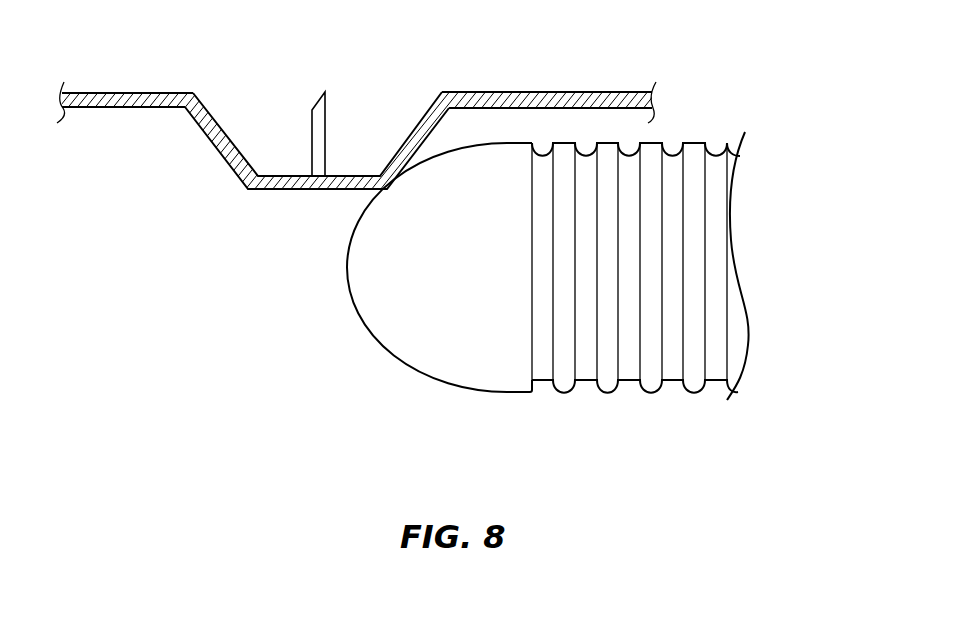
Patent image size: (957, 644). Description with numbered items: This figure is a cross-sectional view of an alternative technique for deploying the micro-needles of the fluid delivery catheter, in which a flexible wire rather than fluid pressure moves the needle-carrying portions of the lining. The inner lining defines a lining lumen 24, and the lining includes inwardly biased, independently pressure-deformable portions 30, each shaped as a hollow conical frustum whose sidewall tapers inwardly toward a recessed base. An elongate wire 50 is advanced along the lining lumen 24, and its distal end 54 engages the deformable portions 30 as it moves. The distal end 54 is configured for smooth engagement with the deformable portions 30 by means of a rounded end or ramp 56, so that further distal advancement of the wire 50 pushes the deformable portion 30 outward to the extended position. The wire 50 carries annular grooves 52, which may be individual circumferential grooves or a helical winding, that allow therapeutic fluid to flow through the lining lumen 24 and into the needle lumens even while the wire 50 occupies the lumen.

The lining lumen 24 is at (543, 125).
The pressure-deformable portion 30 is at (206, 159).
The elongate wire 50 is at (699, 118).
The annular grooves 52 is at (543, 380).
The distal end 54 is at (337, 300).
The rounded end or ramp 56 is at (383, 185).